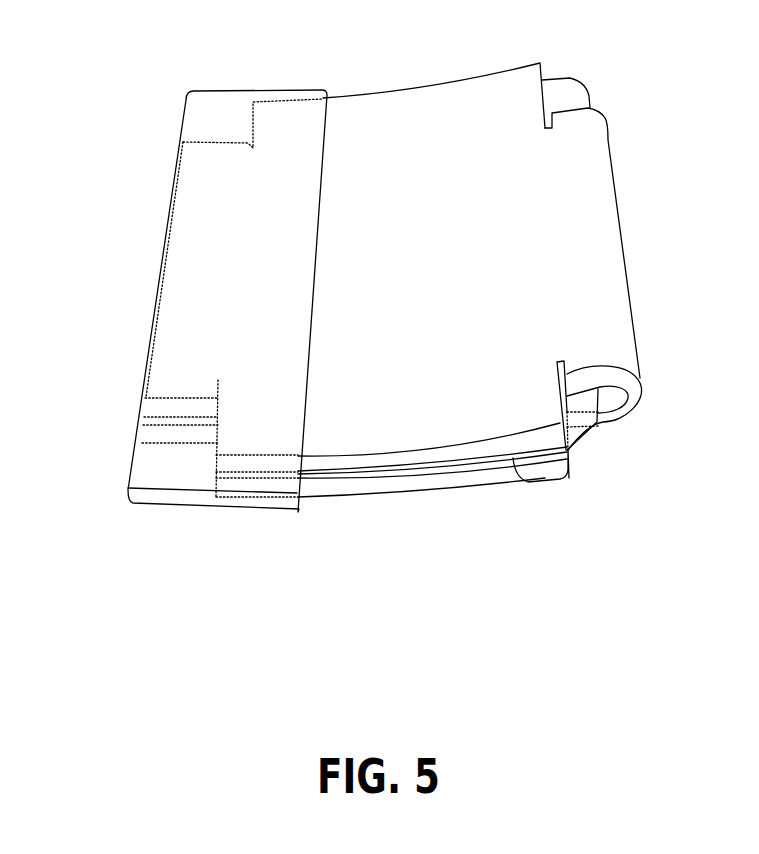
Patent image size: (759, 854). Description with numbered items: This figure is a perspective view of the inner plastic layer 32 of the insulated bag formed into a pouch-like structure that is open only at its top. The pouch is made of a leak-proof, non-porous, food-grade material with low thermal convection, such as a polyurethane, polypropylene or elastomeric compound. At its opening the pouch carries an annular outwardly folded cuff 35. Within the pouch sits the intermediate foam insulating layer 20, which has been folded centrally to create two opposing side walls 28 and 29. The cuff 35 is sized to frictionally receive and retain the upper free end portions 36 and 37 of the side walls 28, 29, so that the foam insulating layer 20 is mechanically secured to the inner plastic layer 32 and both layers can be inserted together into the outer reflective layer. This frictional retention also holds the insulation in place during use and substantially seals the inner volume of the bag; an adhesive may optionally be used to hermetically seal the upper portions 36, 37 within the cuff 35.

The foam insulating layer 20 is at (652, 334).
The side wall 28 is at (427, 100).
The side wall 29 is at (370, 497).
The inner plastic layer 32 is at (573, 93).
The cuff 35 is at (283, 108).
The upper free end portion 36 is at (176, 285).
The upper free end portion 37 is at (253, 488).